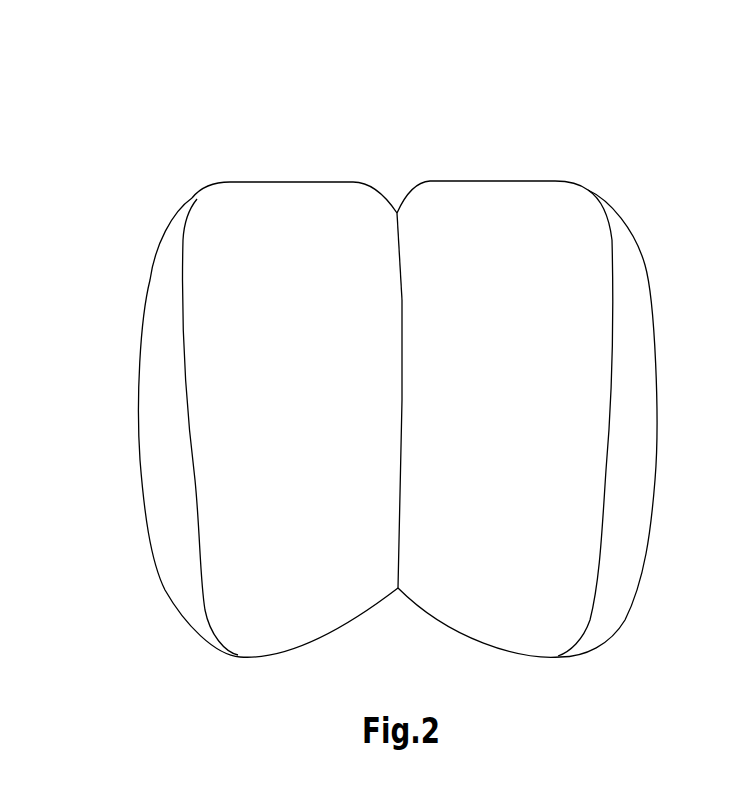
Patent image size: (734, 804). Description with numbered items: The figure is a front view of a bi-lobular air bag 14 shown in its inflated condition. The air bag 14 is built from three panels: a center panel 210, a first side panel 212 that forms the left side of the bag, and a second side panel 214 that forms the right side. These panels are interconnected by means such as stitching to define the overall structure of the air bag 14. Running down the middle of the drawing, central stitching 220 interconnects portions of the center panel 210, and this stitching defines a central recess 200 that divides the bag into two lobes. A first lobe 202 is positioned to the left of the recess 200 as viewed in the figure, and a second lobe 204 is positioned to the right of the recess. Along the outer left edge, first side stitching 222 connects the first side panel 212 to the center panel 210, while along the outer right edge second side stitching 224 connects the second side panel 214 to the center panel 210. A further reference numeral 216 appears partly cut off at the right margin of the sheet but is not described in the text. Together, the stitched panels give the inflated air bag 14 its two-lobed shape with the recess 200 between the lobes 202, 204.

The air bag 14 is at (295, 147).
The central recess 200 is at (349, 400).
The first lobe 202 is at (244, 419).
The second lobe 204 is at (562, 383).
The center panel 210 is at (465, 228).
The first side panel 212 is at (153, 363).
The second side panel 214 is at (635, 355).
The side portion 216 is at (723, 526).
The central stitching 220 is at (403, 382).
The first side stitching 222 is at (190, 442).
The second side stitching 224 is at (612, 370).